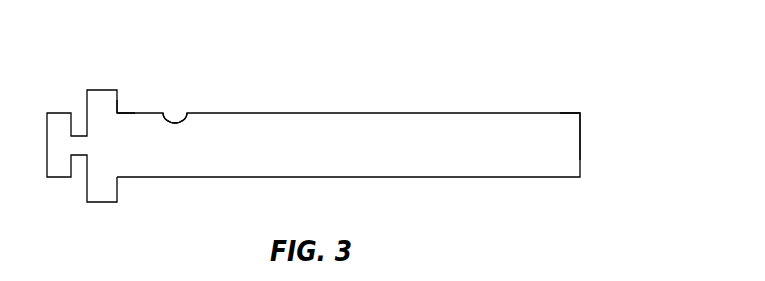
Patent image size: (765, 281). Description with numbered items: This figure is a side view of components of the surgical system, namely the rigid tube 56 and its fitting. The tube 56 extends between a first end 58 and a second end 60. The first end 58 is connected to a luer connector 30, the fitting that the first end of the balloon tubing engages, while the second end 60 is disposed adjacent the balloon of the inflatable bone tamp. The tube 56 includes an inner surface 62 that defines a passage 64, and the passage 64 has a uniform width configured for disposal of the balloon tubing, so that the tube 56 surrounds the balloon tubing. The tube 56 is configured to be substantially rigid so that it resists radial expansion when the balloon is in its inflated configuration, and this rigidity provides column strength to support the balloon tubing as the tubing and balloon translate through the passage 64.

The luer connector 30 is at (100, 89).
The tube 56 is at (333, 103).
The first end 58 is at (132, 110).
The second end 60 is at (550, 112).
The inner surface 62 is at (187, 113).
The passage 64 is at (590, 142).